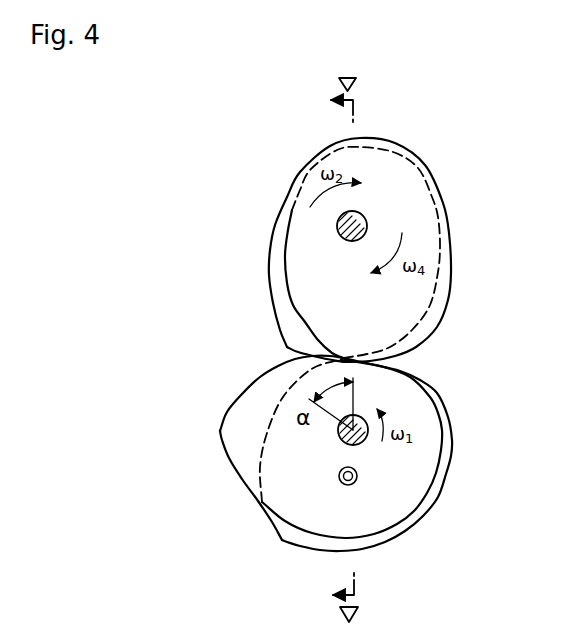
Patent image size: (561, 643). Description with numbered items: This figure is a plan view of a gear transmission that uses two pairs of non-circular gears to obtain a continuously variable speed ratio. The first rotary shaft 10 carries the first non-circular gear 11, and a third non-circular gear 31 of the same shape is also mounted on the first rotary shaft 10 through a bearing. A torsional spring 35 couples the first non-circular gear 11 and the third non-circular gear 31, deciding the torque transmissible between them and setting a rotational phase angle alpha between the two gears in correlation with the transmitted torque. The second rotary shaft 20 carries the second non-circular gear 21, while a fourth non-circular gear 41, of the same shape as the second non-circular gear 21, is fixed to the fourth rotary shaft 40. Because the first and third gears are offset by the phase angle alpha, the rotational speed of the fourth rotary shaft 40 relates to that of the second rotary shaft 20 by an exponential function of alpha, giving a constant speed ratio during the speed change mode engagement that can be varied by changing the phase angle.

The first rotary shaft 10 is at (338, 433).
The first non-circular gear 11 is at (247, 412).
The second rotary shaft 20 is at (337, 222).
The second non-circular gear 21 is at (318, 286).
The third non-circular gear 31 is at (425, 501).
The torsional spring 35 is at (357, 481).
The fourth rotary shaft 40 is at (370, 217).
The fourth non-circular gear 41 is at (298, 336).